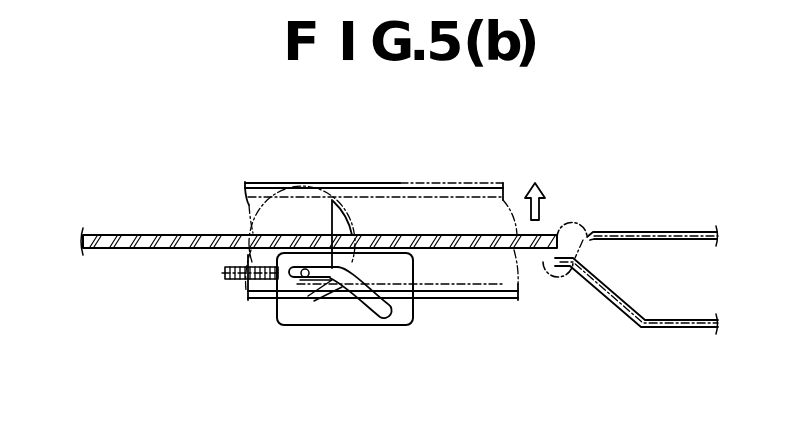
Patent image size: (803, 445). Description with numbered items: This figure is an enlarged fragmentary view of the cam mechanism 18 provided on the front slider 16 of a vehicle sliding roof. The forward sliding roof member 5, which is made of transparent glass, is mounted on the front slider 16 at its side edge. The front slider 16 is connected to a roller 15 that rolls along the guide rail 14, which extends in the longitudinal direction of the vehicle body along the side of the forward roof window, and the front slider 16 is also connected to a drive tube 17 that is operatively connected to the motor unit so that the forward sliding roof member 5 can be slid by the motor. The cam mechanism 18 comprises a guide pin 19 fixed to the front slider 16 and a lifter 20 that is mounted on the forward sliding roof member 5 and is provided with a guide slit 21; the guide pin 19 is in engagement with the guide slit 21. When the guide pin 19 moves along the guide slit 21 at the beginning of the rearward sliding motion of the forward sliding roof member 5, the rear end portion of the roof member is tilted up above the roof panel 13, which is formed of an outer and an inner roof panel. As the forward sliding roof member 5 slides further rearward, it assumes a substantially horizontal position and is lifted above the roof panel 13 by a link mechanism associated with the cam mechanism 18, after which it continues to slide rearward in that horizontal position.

The forward sliding roof member 5 is at (172, 233).
The roof panel 13 is at (668, 230).
The guide rail 14 is at (495, 183).
The roller 15 is at (350, 227).
The front slider 16 is at (280, 320).
The drive tube 17 is at (229, 281).
The cam mechanism 18 is at (393, 338).
The guide pin 19 is at (302, 279).
The lifter 20 is at (347, 318).
The guide slit 21 is at (400, 311).